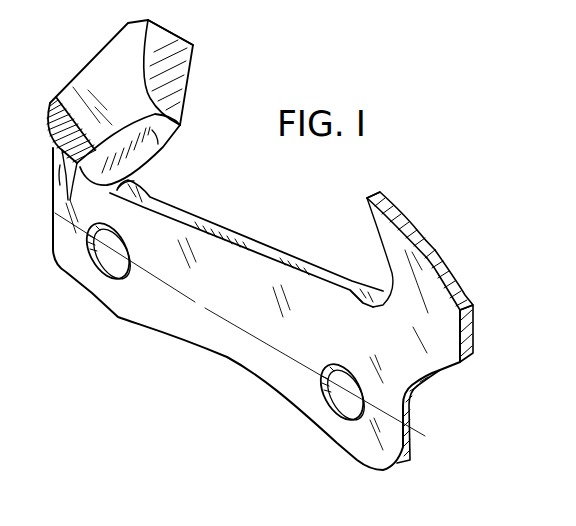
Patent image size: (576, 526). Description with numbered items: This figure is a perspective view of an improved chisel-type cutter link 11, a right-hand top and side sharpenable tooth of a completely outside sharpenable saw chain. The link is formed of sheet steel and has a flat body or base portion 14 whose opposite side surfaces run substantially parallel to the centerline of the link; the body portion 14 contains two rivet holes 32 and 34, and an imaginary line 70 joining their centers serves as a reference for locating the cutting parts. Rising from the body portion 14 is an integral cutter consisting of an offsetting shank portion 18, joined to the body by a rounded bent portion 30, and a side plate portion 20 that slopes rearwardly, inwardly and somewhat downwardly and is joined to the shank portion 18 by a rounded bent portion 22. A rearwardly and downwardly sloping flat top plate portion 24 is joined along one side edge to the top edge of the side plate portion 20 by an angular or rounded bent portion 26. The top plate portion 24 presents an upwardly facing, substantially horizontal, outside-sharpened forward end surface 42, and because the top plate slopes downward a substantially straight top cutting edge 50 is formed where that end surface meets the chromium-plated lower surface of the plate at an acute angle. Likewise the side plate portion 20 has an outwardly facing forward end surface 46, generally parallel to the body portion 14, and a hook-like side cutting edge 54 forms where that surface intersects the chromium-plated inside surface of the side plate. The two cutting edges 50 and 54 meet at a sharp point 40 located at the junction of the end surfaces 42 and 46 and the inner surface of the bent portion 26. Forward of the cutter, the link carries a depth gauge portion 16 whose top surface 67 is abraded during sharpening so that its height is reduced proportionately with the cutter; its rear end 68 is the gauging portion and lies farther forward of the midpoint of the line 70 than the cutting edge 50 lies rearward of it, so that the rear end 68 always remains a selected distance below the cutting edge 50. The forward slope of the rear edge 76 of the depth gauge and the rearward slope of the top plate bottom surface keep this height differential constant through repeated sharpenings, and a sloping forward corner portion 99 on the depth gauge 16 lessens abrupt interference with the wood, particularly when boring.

The cutter link 11 is at (452, 214).
The body portion 14 is at (193, 325).
The depth gauge portion 16 is at (420, 267).
The shank portion 18 is at (53, 170).
The side plate portion 20 is at (46, 122).
The bent portion 22 is at (65, 203).
The top plate portion 24 is at (122, 43).
The bent portion 26 is at (117, 90).
The bent portion 30 is at (125, 195).
The rivet hole 32 is at (92, 268).
The rivet hole 34 is at (321, 396).
The sharp point 40 is at (180, 125).
The forward end surface of top plate portion 42 is at (170, 77).
The forward end surface of side plate portion 46 is at (158, 139).
The top cutting edge 50 is at (197, 62).
The side cutting edge 54 is at (155, 138).
The top surface of depth gauge portion 67 is at (406, 218).
The rear end of depth gauge portion 68 is at (366, 197).
The imaginary line 70 is at (217, 313).
The rear edge of depth gauge portion 76 is at (380, 237).
The sloping forward corner portion 99 is at (462, 278).